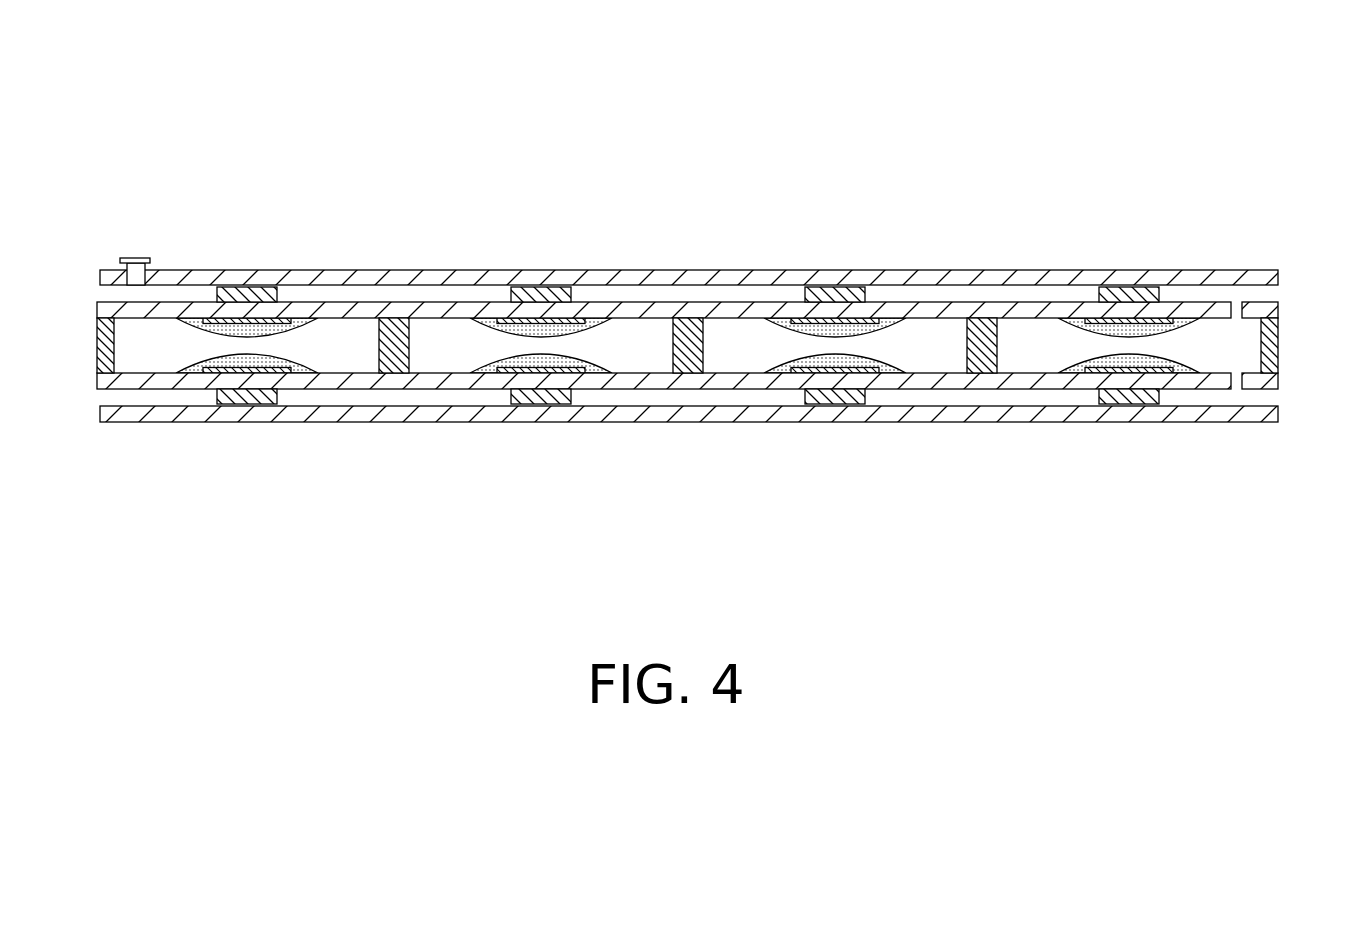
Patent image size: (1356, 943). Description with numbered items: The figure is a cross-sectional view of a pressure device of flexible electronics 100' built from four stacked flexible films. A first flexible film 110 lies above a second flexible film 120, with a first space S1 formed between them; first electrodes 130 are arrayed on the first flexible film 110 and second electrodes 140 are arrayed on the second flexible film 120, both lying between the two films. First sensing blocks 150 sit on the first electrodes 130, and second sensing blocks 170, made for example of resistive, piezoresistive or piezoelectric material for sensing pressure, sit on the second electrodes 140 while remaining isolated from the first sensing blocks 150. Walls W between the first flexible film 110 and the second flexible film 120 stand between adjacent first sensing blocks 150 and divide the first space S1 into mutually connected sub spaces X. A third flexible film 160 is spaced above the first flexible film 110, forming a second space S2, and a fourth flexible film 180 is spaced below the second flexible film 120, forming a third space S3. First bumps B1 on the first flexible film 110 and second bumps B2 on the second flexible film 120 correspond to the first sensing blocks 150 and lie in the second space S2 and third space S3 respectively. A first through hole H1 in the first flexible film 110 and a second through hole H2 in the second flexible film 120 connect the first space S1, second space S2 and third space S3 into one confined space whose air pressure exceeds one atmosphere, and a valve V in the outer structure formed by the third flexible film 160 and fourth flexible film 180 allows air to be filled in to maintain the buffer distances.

The pressure device of flexible electronics 100' is at (1248, 107).
The first flexible film 110 is at (110, 311).
The second flexible film 120 is at (127, 382).
The first electrodes 130 is at (213, 322).
The second electrodes 140 is at (210, 376).
The first sensing blocks 150 is at (263, 338).
The third flexible film 160 is at (734, 280).
The second sensing blocks 170 is at (266, 354).
The fourth flexible film 180 is at (110, 413).
The first bumps B1 is at (248, 296).
The second bumps B2 is at (248, 395).
The valve V is at (130, 258).
The walls W is at (100, 348).
The sub spaces X is at (340, 360).
The first space S1 is at (803, 491).
The second space S2 is at (1058, 298).
The third space S3 is at (1058, 396).
The first through hole H1 is at (1238, 313).
The second through hole H2 is at (1238, 380).